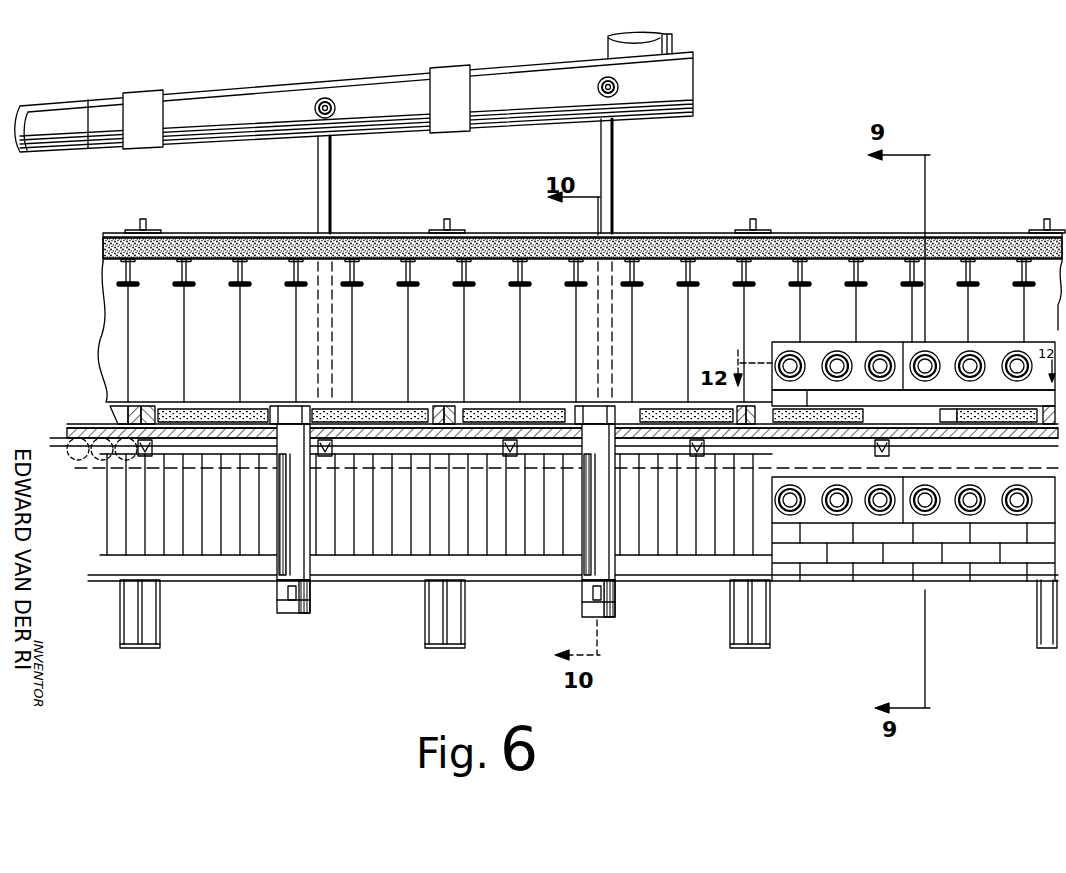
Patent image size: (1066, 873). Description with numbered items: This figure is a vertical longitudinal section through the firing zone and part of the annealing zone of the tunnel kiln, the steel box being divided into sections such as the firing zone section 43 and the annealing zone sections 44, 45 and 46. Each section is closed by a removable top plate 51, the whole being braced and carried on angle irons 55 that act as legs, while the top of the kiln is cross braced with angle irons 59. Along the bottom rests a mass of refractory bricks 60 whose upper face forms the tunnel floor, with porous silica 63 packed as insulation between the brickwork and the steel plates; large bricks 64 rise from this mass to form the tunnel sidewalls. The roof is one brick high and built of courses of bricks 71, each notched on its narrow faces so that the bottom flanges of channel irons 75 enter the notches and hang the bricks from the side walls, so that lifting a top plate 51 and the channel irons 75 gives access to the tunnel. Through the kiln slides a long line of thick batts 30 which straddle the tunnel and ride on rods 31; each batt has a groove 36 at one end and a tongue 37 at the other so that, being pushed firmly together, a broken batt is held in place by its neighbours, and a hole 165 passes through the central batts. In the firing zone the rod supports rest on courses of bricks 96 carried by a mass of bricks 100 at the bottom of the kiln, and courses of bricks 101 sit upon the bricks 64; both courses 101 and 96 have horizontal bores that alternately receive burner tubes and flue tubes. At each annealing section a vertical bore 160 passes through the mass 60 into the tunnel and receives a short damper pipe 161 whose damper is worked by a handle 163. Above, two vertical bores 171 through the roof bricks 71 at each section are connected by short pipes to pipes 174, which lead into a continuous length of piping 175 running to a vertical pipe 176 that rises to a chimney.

The batts 30 is at (988, 430).
The rods 31 is at (192, 466).
The groove 36 is at (1050, 440).
The tongue 37 is at (947, 425).
The section 43 is at (902, 583).
The section 44 is at (650, 583).
The section 45 is at (240, 582).
The section 46 is at (100, 583).
The top plate 51 is at (500, 235).
The angle irons 55 is at (120, 624).
The angle irons 59 is at (451, 232).
The mass of refractory bricks 60 is at (130, 508).
The porous silica 63 is at (690, 238).
The large bricks 64 is at (866, 400).
The courses of bricks 71 is at (135, 302).
The channel irons 75 is at (183, 258).
The courses of bricks 96 is at (817, 523).
The mass of bricks 100 is at (883, 563).
The courses of bricks 101 is at (812, 342).
The vertical bore 160 is at (305, 552).
The damper pipe 161 is at (310, 614).
The handle 163 is at (291, 606).
The hole 165 is at (297, 420).
The vertical bores 171 is at (335, 334).
The pipes 174 is at (318, 182).
The piping 175 is at (191, 137).
The vertical pipe 176 is at (694, 52).